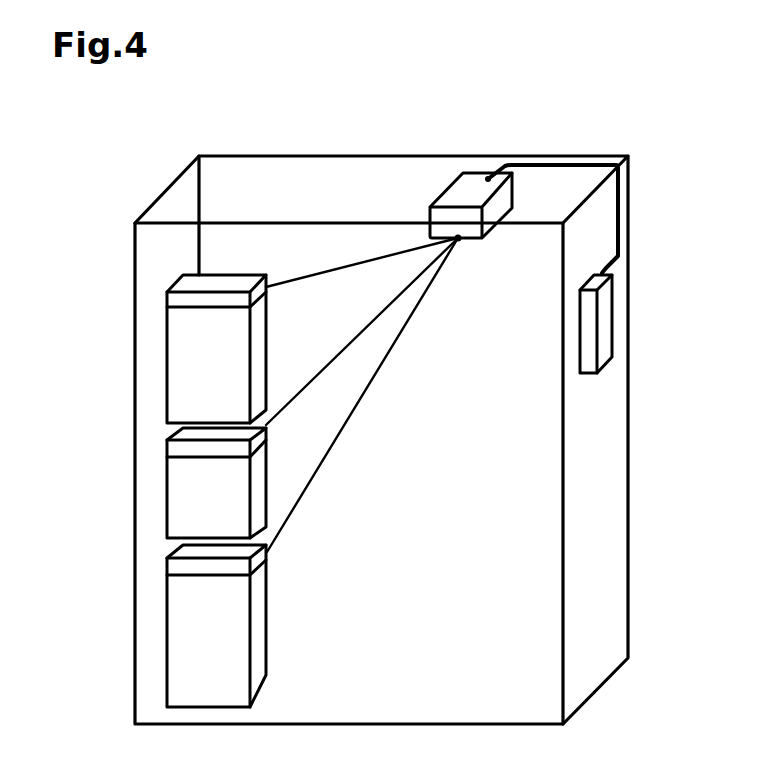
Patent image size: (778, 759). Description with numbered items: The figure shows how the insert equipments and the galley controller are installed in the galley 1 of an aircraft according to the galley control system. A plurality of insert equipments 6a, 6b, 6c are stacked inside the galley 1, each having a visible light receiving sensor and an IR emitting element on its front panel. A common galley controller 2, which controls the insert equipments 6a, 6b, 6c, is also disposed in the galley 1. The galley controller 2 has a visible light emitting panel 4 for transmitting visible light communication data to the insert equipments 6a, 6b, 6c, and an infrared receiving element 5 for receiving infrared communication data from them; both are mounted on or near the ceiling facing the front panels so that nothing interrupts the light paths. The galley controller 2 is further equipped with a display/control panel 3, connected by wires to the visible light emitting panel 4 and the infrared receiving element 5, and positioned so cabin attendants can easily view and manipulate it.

The galley 1 is at (131, 263).
The galley controller 2 is at (624, 198).
The display/control panel 3 is at (607, 315).
The visible light emitting panel 4 is at (460, 190).
The infrared receiving element 5 is at (460, 242).
The insert equipment 6a is at (257, 335).
The insert equipment 6b is at (258, 472).
The insert equipment 6c is at (258, 592).